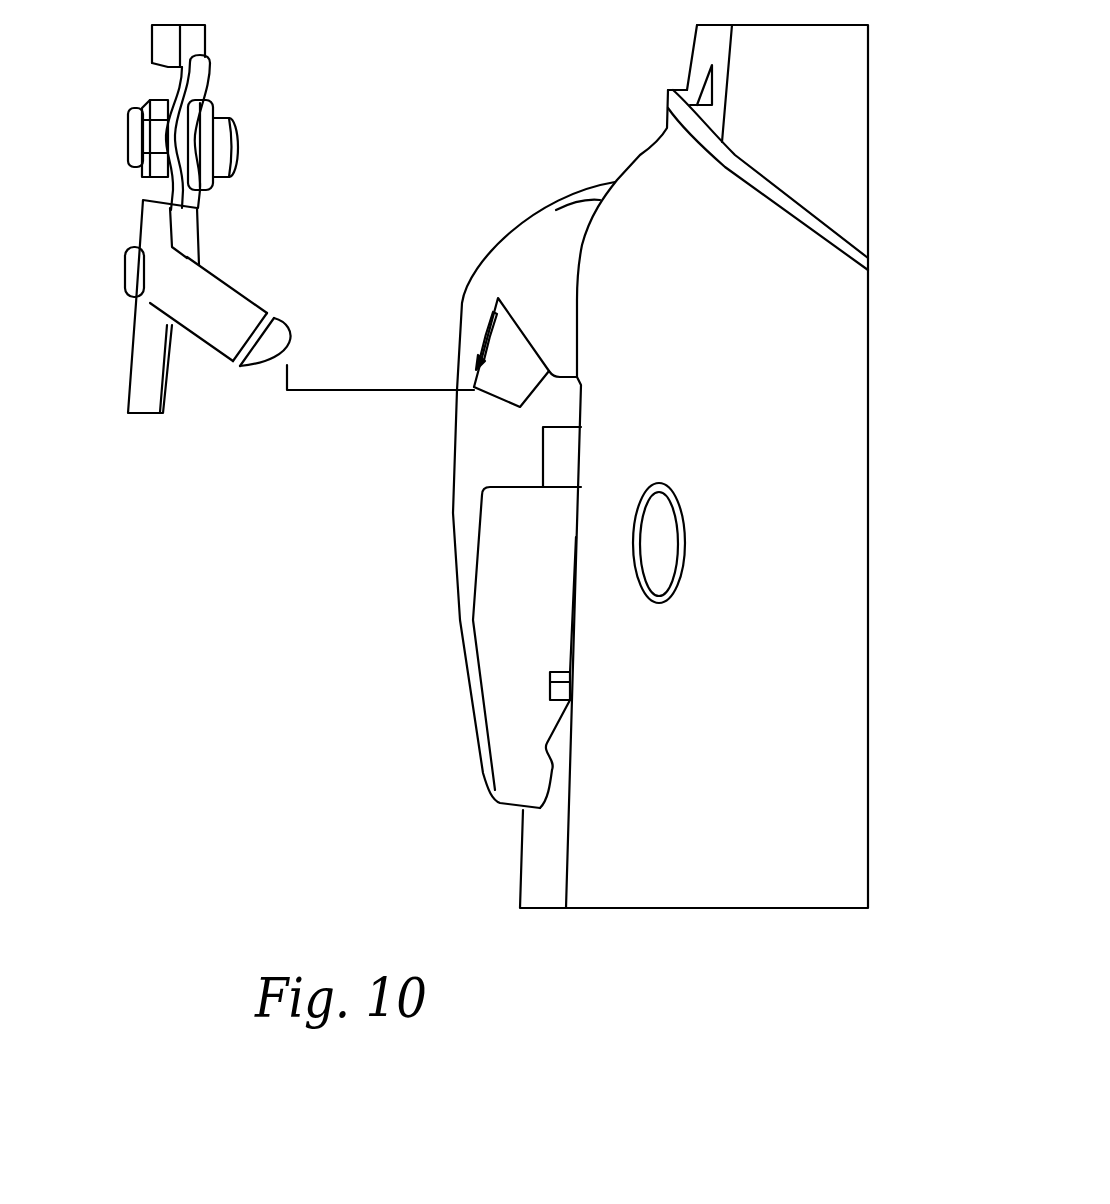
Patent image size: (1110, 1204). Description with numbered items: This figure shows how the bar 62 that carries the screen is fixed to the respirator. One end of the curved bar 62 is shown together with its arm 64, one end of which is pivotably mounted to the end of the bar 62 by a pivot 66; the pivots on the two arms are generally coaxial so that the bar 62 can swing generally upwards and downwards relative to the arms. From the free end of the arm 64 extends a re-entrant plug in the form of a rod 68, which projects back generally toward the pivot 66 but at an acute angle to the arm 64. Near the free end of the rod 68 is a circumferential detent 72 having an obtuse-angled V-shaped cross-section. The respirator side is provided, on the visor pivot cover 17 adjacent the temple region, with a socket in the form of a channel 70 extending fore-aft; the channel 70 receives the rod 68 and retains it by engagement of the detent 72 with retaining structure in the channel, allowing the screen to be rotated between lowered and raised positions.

The visor pivot cover 17 is at (533, 237).
The bar 62 is at (203, 47).
The arm 64 is at (143, 410).
The pivot 66 is at (135, 138).
The rod 68 is at (205, 330).
The channel 70 is at (448, 402).
The detent 72 is at (267, 322).